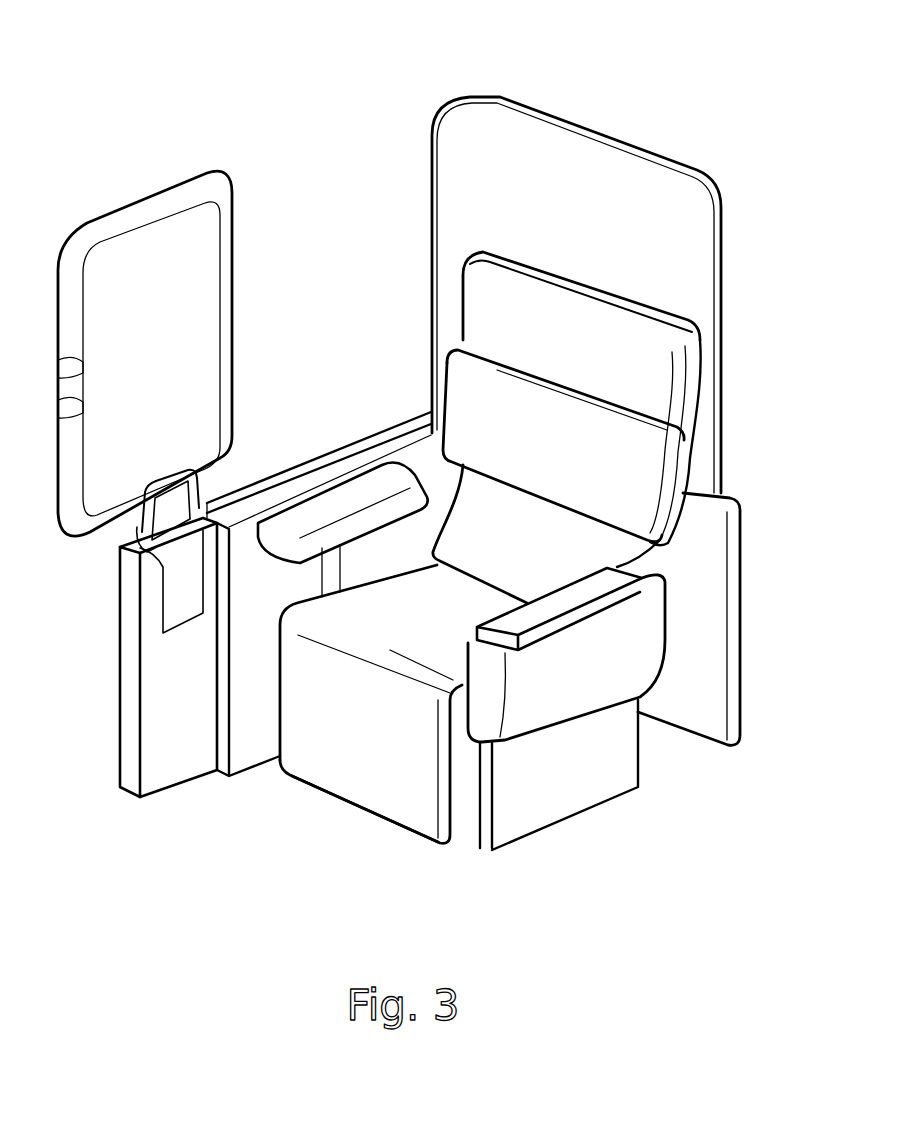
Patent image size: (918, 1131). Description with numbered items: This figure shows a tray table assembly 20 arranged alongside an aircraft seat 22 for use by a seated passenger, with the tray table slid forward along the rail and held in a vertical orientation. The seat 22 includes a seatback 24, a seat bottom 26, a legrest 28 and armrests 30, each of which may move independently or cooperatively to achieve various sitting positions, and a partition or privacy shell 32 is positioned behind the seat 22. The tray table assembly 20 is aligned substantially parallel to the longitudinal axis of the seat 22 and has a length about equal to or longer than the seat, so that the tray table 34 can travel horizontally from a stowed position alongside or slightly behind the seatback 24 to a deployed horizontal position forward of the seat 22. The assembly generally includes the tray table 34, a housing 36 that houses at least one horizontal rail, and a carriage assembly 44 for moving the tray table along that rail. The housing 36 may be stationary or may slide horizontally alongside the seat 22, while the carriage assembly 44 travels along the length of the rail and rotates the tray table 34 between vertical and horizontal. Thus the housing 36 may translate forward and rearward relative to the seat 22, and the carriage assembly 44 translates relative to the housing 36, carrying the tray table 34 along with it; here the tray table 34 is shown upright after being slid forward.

The tray table assembly 20 is at (290, 420).
The aircraft seat 22 is at (757, 277).
The seatback 24 is at (633, 477).
The seat bottom 26 is at (363, 630).
The legrest 28 is at (402, 777).
The armrests 30 is at (337, 500).
The partition or privacy shell 32 is at (563, 152).
The tray table 34 is at (131, 260).
The housing 36 is at (160, 672).
The carriage assembly 44 is at (174, 607).